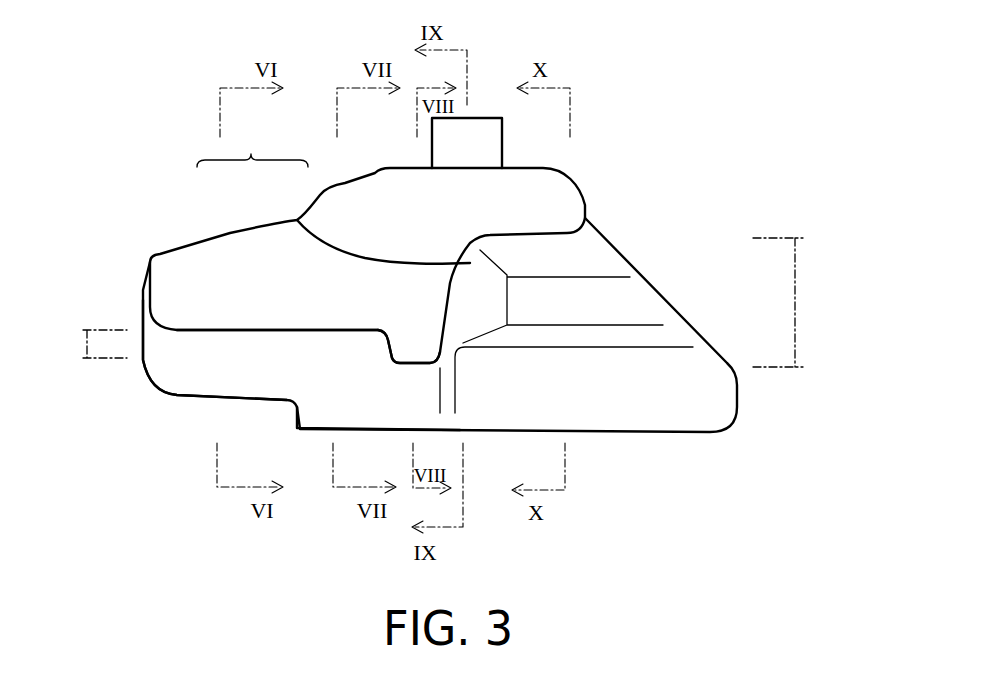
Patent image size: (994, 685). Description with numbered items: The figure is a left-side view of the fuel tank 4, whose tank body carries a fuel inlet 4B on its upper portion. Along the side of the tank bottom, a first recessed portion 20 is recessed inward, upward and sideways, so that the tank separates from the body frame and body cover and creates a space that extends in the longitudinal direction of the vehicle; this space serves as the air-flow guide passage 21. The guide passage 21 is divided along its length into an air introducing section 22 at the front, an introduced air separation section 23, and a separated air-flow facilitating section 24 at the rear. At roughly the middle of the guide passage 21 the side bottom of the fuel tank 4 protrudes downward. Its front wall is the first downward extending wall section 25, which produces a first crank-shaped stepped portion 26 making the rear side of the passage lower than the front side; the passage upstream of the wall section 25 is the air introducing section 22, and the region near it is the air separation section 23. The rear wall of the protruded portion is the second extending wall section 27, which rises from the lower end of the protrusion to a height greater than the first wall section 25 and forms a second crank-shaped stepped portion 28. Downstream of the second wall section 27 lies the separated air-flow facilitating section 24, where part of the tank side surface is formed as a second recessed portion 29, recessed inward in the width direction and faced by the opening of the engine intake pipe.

The fuel tank 4 is at (658, 206).
The fuel inlet 4B is at (502, 144).
The first recessed portion 20 is at (190, 382).
The air-flow guide passage 21 is at (252, 149).
The air introducing section 22 is at (269, 364).
The introduced air separation section 23 is at (421, 380).
The separated air-flow facilitating section 24 is at (300, 221).
The first downward extending wall section 25 is at (382, 350).
The first crank-shaped stepped portion 26 is at (83, 342).
The second extending wall section 27 is at (450, 302).
The second crank-shaped stepped portion 28 is at (795, 297).
The second recessed portion 29 is at (582, 304).